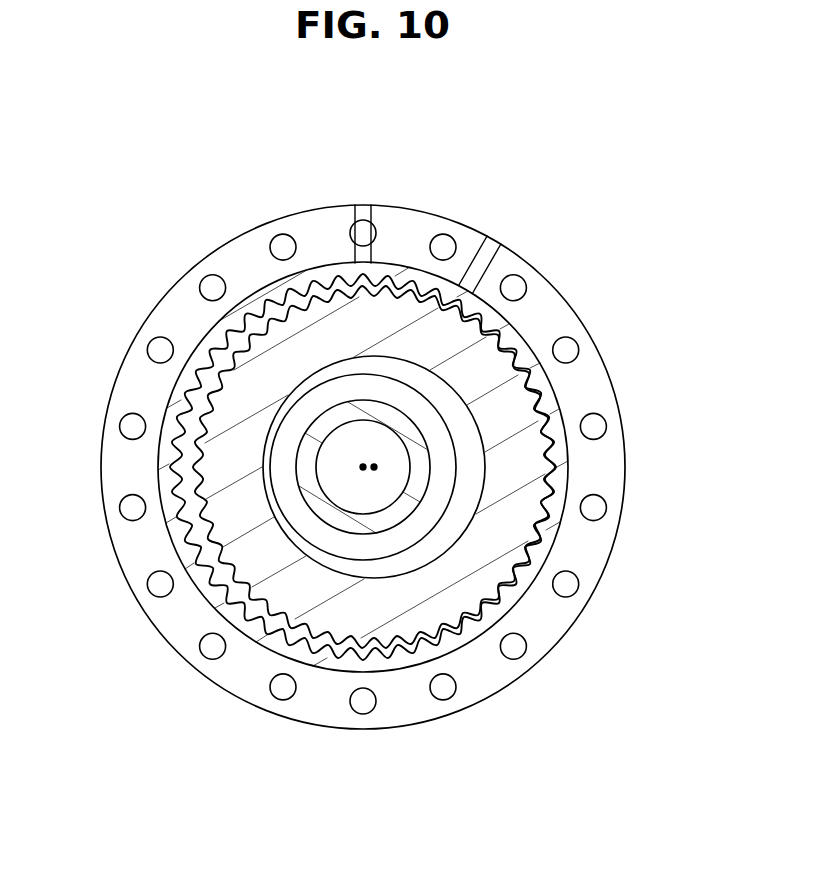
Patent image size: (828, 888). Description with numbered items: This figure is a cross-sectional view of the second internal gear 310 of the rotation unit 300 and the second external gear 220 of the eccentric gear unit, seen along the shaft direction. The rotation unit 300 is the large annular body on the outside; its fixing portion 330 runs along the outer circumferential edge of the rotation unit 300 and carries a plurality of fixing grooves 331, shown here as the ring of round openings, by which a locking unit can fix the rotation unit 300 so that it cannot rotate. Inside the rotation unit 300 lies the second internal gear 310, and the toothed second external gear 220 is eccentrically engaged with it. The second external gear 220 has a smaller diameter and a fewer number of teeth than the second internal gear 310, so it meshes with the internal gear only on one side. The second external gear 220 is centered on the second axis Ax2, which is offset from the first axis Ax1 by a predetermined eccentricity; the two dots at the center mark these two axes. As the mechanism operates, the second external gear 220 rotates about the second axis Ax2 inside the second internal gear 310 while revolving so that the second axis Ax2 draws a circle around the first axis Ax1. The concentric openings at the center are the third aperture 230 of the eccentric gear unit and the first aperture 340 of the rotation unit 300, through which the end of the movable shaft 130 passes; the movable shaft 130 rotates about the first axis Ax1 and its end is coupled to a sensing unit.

The rotation unit 300 is at (397, 467).
The fixing portion 330 is at (560, 318).
The fixing grooves 331 is at (578, 349).
The second internal gear 310 is at (182, 491).
The second external gear 220 is at (213, 573).
The third aperture 230 is at (483, 433).
The first aperture 340 is at (447, 473).
The movable shaft 130 is at (413, 504).
The first axis Ax1 is at (363, 470).
The second axis Ax2 is at (374, 470).